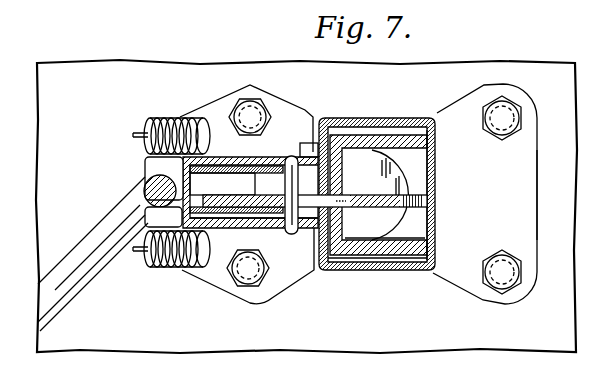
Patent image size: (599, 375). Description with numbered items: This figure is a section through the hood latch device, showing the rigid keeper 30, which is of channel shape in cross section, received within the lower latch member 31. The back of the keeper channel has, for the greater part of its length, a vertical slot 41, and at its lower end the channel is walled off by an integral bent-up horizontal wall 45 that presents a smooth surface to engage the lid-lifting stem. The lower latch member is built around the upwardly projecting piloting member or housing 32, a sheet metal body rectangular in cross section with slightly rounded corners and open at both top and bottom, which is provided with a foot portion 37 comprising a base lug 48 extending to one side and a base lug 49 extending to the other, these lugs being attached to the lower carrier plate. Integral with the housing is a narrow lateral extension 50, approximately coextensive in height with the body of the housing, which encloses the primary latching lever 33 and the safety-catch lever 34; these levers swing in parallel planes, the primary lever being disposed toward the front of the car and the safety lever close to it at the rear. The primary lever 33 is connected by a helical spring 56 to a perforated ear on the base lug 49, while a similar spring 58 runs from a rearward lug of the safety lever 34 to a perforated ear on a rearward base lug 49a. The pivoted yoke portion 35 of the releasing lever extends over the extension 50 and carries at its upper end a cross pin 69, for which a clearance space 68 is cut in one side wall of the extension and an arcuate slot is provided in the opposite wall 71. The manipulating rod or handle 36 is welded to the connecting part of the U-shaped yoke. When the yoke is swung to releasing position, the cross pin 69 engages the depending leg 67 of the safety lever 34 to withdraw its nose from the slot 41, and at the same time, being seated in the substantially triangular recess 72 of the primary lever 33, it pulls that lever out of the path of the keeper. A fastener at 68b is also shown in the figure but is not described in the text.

The rigid keeper 30 is at (377, 137).
The lower latch member 31 is at (437, 143).
The piloting member or housing 32 is at (435, 175).
The primary latching lever 33 is at (385, 225).
The safety-catch lever 34 is at (335, 175).
The pivoted yoke portion of the releasing lever 35 is at (160, 163).
The manipulating rod or handle portion of the releasing lever 36 is at (90, 240).
The foot portion of the piloting housing 37 is at (503, 186).
The vertical slot 41 is at (330, 262).
The bent-up horizontal wall 45 is at (402, 219).
The base lug 48 is at (530, 177).
The base lug 49 is at (245, 194).
The rearward base lug 49a is at (208, 108).
The narrow lateral extension 50 is at (218, 219).
The helical spring 56 is at (157, 270).
The spring 58 is at (150, 122).
The depending leg 67 is at (246, 222).
The clearance space 68 is at (248, 167).
The bolt 68b is at (243, 228).
The cross pin 69 is at (302, 157).
The opposite wall of extension 71 is at (282, 236).
The substantially triangular recess 72 is at (337, 203).